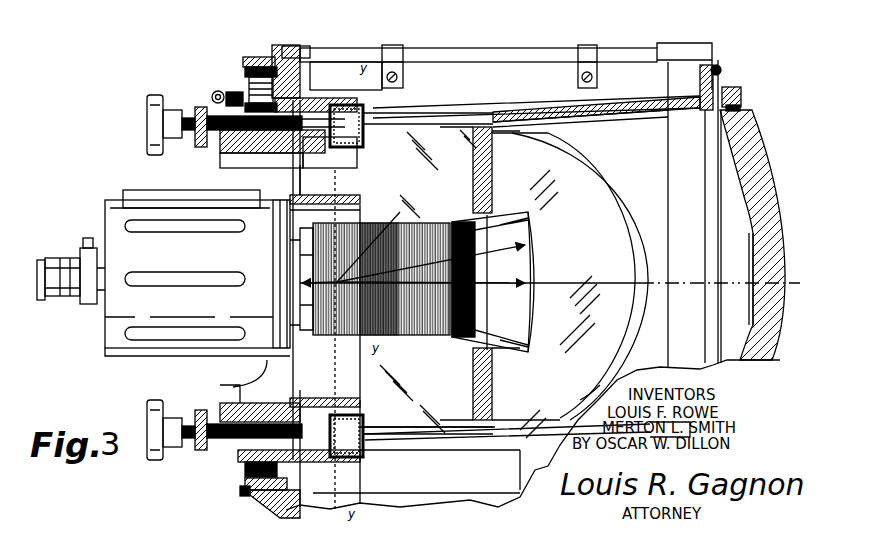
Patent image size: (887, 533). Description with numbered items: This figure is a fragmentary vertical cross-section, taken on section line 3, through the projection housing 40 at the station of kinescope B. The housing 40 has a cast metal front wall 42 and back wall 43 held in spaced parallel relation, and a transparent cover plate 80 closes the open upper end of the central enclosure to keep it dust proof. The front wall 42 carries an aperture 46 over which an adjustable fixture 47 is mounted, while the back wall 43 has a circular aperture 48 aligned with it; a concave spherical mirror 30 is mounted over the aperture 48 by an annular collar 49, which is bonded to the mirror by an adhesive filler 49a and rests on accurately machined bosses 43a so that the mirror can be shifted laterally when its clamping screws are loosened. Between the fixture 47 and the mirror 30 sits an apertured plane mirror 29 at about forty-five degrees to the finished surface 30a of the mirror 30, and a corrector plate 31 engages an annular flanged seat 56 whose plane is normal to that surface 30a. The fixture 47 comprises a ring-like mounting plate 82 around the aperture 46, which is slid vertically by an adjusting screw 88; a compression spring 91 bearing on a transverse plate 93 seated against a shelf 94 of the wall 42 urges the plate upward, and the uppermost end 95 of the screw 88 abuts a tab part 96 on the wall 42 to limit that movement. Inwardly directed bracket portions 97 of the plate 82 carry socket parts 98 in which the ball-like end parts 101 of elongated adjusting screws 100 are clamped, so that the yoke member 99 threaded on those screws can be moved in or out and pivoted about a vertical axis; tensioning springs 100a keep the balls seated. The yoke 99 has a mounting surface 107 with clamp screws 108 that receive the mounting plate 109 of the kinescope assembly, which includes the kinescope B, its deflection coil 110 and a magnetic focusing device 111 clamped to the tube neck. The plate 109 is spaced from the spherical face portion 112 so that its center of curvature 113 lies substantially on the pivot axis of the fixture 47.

The section line 3 is at (446, 280).
The apertured plane mirror 29 is at (493, 170).
The concave spherical mirror 30 is at (756, 235).
The mirror surface 30a is at (752, 230).
The corrector plate 31 is at (605, 207).
The housing 40 is at (721, 62).
The front wall 42 is at (295, 48).
The back wall 43 is at (692, 99).
The boss 43a is at (718, 172).
The aperture 46 is at (308, 96).
The adjustable fixture 47 is at (190, 158).
The circular aperture 48 is at (705, 152).
The annular collar 49 is at (736, 88).
The adhesive filler 49a is at (741, 107).
The annular flanged seat 56 is at (640, 243).
The transparent cover plate 80 is at (510, 50).
The mounting plate 82 is at (236, 92).
The adjusting screw 88 is at (247, 66).
The compression spring 91 is at (244, 480).
The transversely extending plate 93 is at (244, 489).
The shelf 94 is at (272, 503).
The uppermost end of screw 95 is at (262, 56).
The tab part 96 is at (286, 52).
The bracket portion 97 is at (355, 100).
The socket part 98 is at (352, 132).
The yoke member 99 is at (345, 190).
The adjusting screw 100 is at (184, 115).
The tensioning spring 100a is at (212, 93).
The ball-like end part 101 is at (326, 150).
The mounting surface 107 is at (258, 168).
The clamp screw 108 is at (240, 190).
The mounting plate 109 is at (283, 218).
The deflection coil 110 is at (404, 335).
The magnetic focusing device 111 is at (128, 357).
The spherical face portion 112 is at (535, 285).
The center of curvature 113 is at (398, 215).
The kinescope B is at (52, 262).